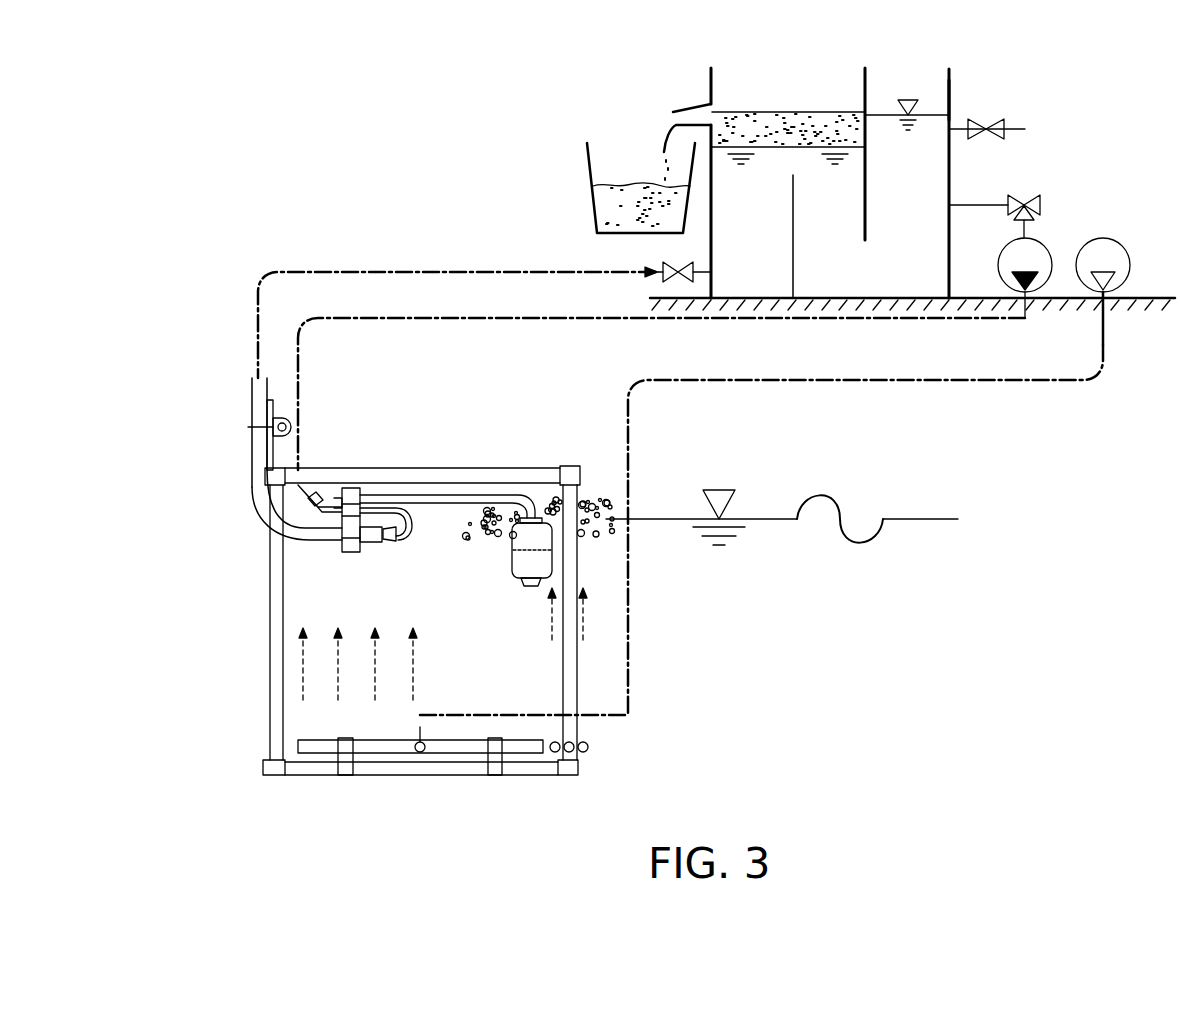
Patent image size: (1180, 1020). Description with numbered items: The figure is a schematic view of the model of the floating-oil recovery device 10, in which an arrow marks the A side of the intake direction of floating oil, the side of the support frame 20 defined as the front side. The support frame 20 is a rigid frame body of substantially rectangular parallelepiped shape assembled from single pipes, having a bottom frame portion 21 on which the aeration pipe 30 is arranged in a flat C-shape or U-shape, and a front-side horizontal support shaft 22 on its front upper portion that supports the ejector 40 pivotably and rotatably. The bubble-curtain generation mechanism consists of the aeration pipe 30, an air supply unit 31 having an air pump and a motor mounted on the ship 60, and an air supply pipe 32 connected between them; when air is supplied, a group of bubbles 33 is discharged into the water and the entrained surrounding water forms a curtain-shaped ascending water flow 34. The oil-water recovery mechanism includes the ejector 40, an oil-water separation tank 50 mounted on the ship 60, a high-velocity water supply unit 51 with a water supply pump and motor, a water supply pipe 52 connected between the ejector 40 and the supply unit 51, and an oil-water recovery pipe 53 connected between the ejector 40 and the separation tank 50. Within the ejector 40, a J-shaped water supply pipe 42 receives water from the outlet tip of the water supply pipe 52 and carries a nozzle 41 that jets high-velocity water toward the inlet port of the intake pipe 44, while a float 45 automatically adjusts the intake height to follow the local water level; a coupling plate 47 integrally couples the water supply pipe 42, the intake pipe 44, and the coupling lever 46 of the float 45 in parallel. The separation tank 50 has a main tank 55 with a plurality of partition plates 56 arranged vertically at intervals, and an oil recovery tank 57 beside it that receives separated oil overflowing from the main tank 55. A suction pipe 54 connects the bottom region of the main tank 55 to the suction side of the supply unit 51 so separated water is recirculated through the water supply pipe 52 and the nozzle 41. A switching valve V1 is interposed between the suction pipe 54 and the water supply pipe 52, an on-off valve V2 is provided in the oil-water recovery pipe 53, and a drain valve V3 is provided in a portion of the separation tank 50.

The oil recovery system 10 is at (408, 142).
The support frame 20 is at (411, 605).
The bottom frame portion 21 is at (296, 772).
The front-side horizontal support shaft 22 is at (278, 427).
The aeration pipe 30 is at (300, 738).
The air supply unit 31 is at (1105, 240).
The air supply pipe 32 is at (945, 382).
The group of bubbles 33 is at (602, 508).
The ascending water flow 34 is at (288, 656).
The ejector 40 is at (332, 485).
The nozzle 41 is at (391, 546).
The water supply pipe 42 is at (414, 530).
The intake pipe 44 is at (285, 522).
The float 45 is at (514, 582).
The coupling lever 46 is at (500, 493).
The coupling plate 47 is at (347, 553).
The oil-water separation tank 50 is at (858, 172).
The high-velocity water supply unit 51 is at (1040, 240).
The water supply pipe 52 is at (745, 322).
The oil-water recovery pipe 53 is at (320, 270).
The suction pipe 54 is at (960, 205).
The main tank 55 is at (950, 103).
The partition plates 56 is at (866, 193).
The oil recovery tank 57 is at (587, 162).
The ship 60 is at (1140, 297).
The switching valve V1 is at (1024, 202).
The on-off valve V2 is at (678, 262).
The drain valve V3 is at (986, 126).
The intake direction of floating oil A is at (218, 493).